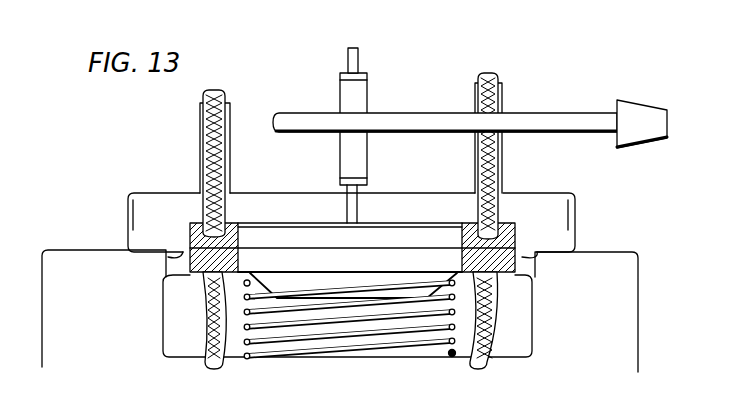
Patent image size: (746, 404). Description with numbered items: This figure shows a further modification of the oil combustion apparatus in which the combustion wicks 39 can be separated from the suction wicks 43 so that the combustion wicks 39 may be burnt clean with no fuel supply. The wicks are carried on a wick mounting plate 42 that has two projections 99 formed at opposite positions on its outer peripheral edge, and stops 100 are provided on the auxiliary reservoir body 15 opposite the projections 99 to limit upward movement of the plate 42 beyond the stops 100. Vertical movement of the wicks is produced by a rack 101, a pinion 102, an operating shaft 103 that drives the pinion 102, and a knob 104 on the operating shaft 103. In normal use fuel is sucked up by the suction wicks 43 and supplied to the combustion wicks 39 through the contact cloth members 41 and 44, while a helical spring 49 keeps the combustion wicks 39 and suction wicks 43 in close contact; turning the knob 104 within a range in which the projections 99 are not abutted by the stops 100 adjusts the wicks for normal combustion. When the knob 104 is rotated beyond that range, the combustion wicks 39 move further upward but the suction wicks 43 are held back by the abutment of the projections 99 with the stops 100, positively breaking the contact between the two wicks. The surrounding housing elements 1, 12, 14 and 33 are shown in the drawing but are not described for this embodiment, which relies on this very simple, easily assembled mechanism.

The machine housing 1 is at (42, 312).
The spring rods 12 is at (368, 350).
The frame 14 is at (522, 193).
The auxiliary reservoir body 15 is at (306, 357).
The plate 33 is at (273, 224).
The combustion wicks 39 is at (226, 98).
The contact cloth member 41 is at (462, 242).
The wick mounting plate 42 is at (324, 298).
The suction wicks 43 is at (497, 355).
The contact cloth member 44 is at (460, 259).
The helical spring 49 is at (453, 357).
The projections 99 is at (163, 298).
The stops 100 is at (175, 254).
The rack 101 is at (358, 62).
The pinion 102 is at (362, 101).
The operating shaft 103 is at (567, 118).
The knob 104 is at (641, 117).